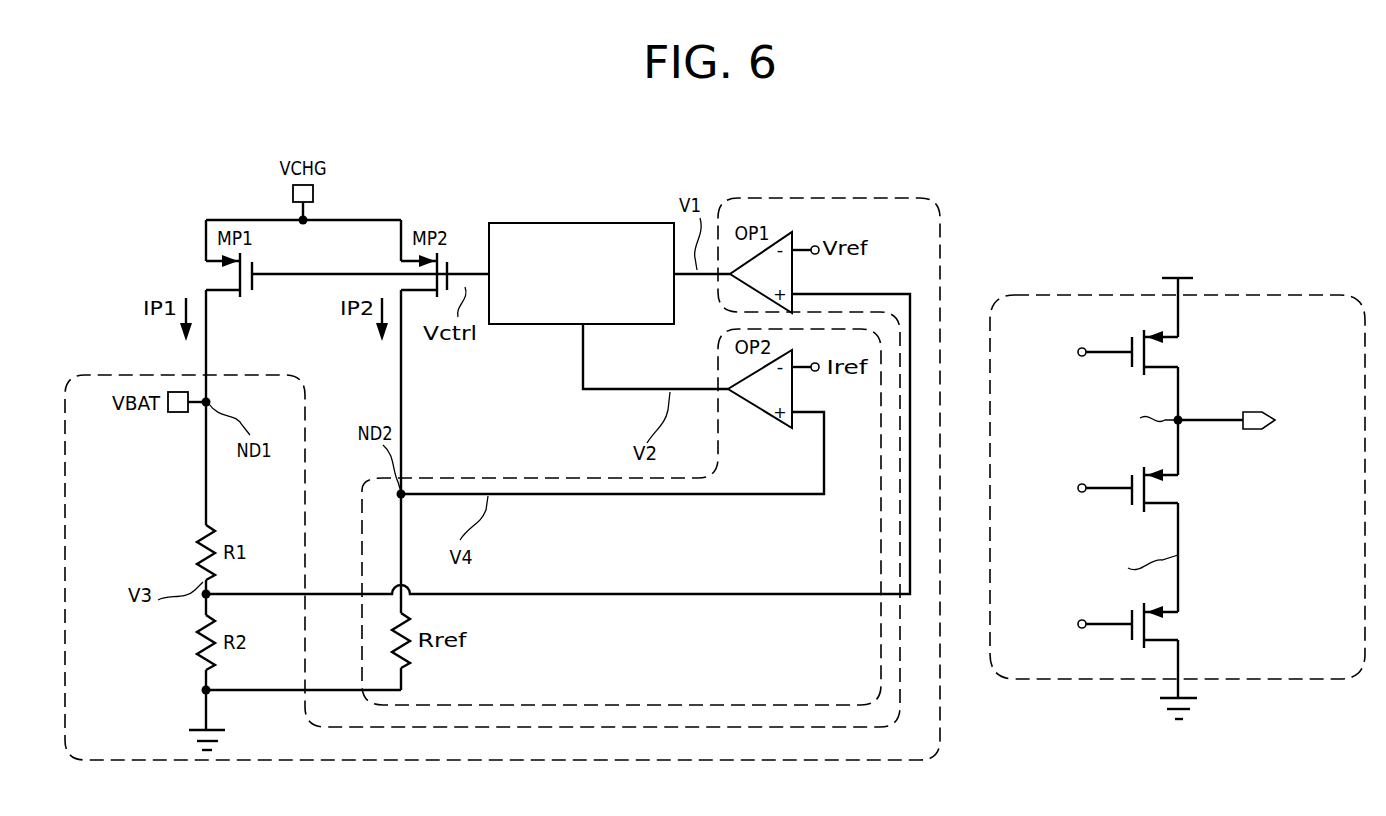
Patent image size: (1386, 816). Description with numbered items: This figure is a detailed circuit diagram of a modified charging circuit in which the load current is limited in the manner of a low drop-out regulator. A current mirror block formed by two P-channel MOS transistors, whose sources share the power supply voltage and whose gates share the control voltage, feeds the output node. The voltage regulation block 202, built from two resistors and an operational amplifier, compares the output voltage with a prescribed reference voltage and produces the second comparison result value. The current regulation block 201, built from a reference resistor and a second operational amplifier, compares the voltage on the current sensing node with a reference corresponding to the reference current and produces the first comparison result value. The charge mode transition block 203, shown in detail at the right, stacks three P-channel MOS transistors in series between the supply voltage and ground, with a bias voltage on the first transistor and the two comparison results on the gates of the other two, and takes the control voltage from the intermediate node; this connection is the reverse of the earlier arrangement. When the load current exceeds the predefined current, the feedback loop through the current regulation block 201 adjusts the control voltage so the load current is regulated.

The current regulation block 201 is at (540, 478).
The voltage regulation block 202 is at (817, 198).
The charge mode transition block 203 is at (583, 223).